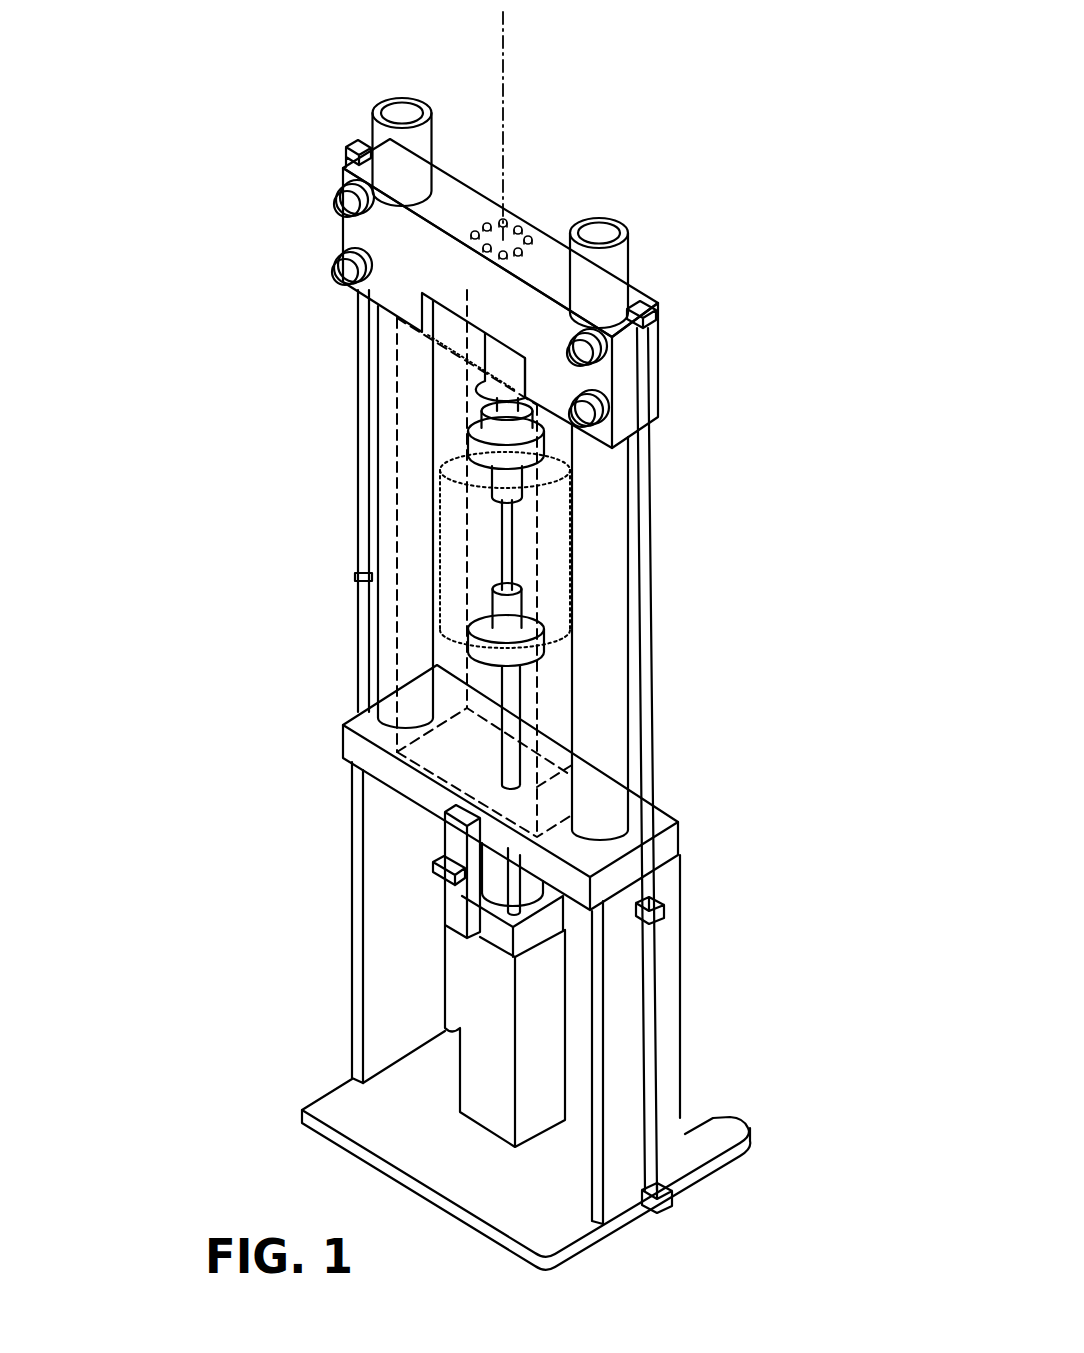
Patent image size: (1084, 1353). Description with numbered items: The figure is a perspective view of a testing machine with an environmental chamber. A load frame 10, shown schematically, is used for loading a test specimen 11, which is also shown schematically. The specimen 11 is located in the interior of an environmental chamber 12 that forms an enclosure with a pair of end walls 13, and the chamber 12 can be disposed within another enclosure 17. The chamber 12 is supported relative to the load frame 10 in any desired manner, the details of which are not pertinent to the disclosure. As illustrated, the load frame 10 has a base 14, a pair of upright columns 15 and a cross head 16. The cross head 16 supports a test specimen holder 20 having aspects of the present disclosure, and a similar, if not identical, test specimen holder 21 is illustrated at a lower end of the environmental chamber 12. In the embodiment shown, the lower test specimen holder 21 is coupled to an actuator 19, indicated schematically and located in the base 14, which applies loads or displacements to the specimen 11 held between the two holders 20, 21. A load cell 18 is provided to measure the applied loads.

The load frame 10 is at (718, 284).
The test specimen 11 is at (515, 583).
The environmental chamber 12 is at (557, 553).
The end walls 13 is at (547, 502).
The base 14 is at (736, 974).
The upright columns 15 is at (383, 468).
The cross head 16 is at (548, 235).
The enclosure 17 is at (538, 787).
The load cell 18 is at (483, 355).
The actuator 19 is at (415, 877).
The test specimen holder 20 is at (540, 488).
The test specimen holder 21 is at (490, 662).